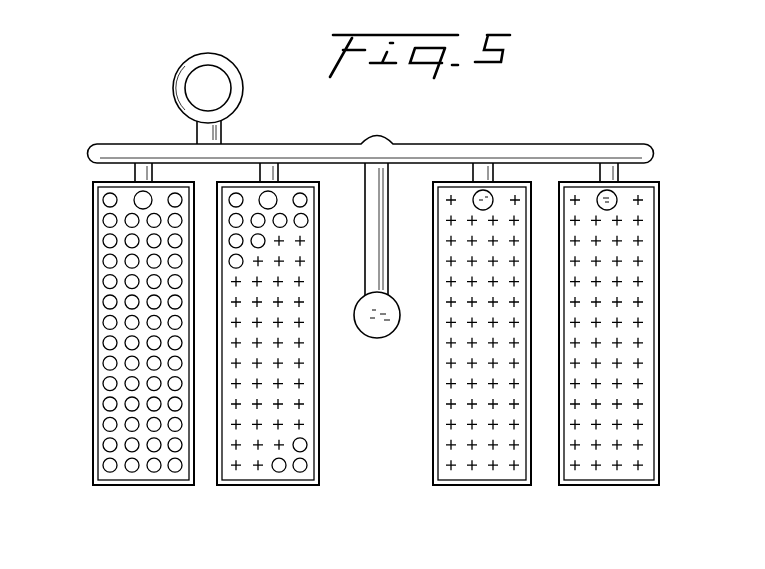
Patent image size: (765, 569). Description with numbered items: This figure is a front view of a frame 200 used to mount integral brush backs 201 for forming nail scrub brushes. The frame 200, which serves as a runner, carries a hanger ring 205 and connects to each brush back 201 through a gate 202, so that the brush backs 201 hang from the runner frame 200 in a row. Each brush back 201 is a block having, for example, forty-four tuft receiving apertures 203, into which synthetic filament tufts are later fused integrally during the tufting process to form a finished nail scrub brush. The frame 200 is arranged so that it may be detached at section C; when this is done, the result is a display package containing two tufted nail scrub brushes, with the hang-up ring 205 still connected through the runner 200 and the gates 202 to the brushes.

The frame 200 is at (468, 143).
The brush back 201 is at (217, 486).
The gate 202 is at (603, 177).
The tuft receiving aperture 203 is at (109, 203).
The hanger ring 205 is at (181, 77).
The section C is at (321, 173).